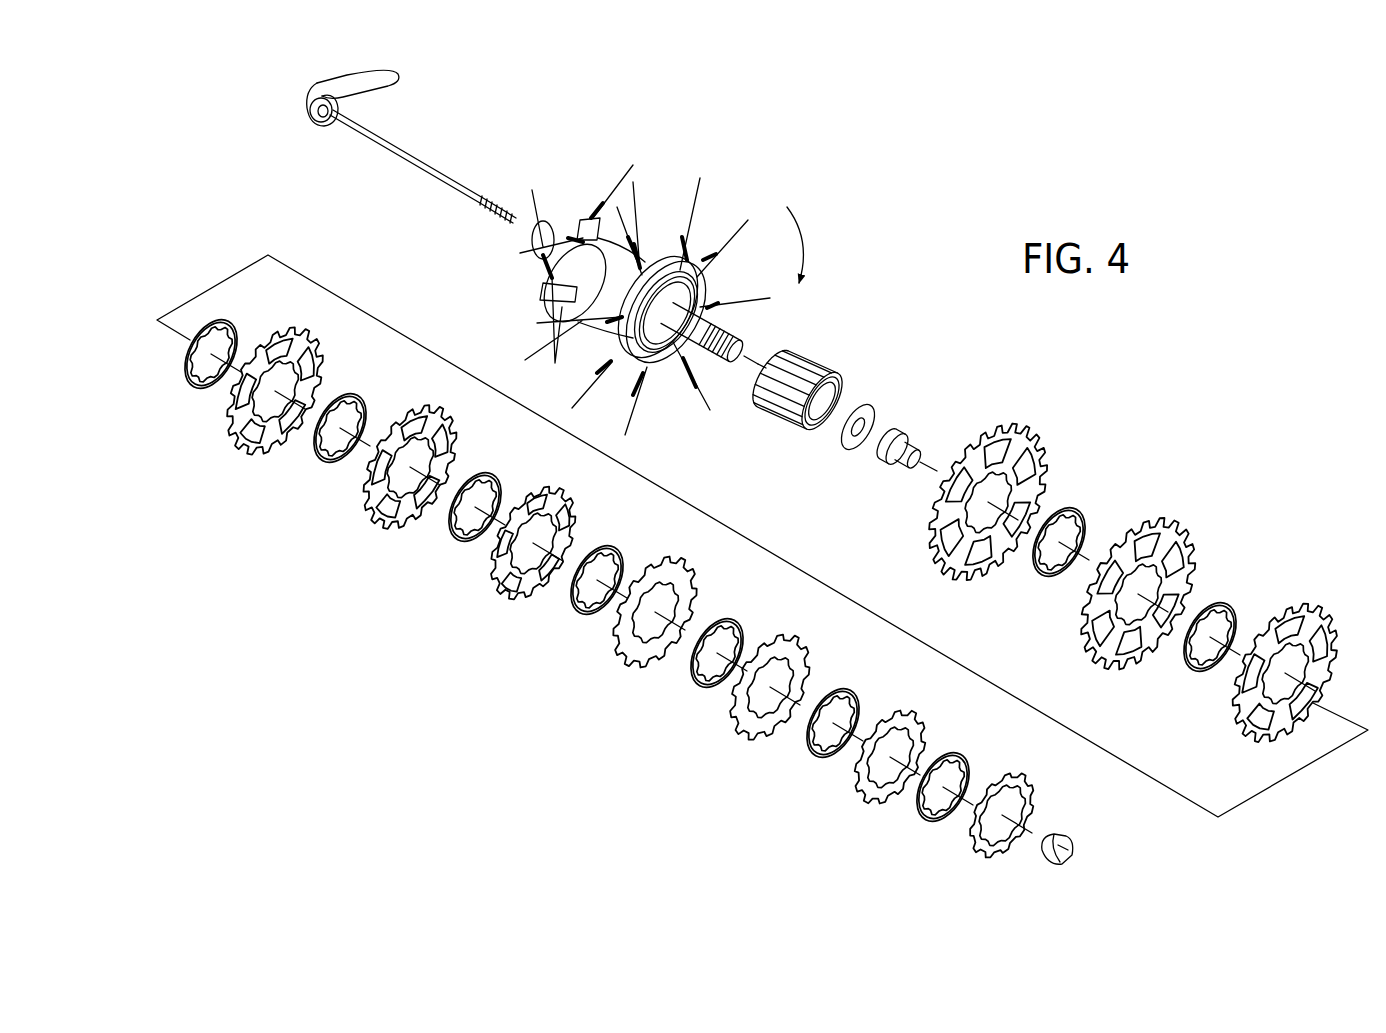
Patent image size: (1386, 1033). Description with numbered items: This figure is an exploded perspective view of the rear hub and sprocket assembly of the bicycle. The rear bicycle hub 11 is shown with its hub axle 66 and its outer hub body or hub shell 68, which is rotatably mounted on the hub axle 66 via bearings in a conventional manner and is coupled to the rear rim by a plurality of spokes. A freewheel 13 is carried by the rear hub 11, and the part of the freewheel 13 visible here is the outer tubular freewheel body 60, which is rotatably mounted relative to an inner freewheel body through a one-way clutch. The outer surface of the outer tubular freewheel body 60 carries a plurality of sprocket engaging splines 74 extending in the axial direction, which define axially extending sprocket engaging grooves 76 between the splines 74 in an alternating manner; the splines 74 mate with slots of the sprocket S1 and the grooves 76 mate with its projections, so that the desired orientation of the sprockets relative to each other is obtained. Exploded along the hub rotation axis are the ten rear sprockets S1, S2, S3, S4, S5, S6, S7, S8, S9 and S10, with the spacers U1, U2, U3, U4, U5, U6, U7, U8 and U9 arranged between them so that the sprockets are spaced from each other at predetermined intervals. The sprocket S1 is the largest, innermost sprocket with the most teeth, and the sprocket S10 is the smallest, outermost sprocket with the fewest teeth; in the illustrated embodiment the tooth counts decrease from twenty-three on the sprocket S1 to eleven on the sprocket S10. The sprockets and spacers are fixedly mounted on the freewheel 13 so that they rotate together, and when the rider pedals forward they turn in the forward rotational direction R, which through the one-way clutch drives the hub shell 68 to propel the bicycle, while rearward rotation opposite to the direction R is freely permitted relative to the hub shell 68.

The rear bicycle hub 11 is at (733, 178).
The hub shell 68 is at (663, 252).
The forward rotational direction R is at (802, 243).
The freewheel 13 is at (826, 331).
The hub axle 66 is at (742, 323).
The outer tubular freewheel body 60 is at (822, 356).
The sprocket engaging grooves 76 is at (829, 372).
The sprocket engaging splines 74 is at (788, 423).
The sprocket S1 is at (1033, 438).
The sprocket S2 is at (1178, 518).
The sprocket S3 is at (1311, 606).
The sprocket S4 is at (246, 453).
The sprocket S5 is at (386, 530).
The sprocket S6 is at (510, 598).
The sprocket S7 is at (623, 667).
The sprocket S8 is at (743, 735).
The sprocket S9 is at (863, 800).
The sprocket S10 is at (1040, 790).
The spacer U1 is at (1078, 510).
The spacer U2 is at (1220, 601).
The spacer U3 is at (192, 388).
The spacer U4 is at (323, 460).
The spacer U5 is at (455, 545).
The spacer U6 is at (575, 612).
The spacer U7 is at (698, 688).
The spacer U8 is at (810, 753).
The spacer U9 is at (923, 822).